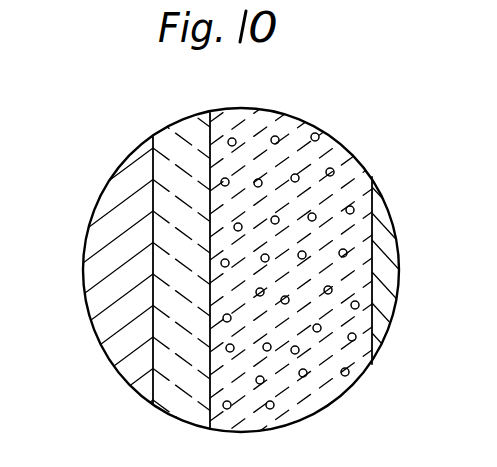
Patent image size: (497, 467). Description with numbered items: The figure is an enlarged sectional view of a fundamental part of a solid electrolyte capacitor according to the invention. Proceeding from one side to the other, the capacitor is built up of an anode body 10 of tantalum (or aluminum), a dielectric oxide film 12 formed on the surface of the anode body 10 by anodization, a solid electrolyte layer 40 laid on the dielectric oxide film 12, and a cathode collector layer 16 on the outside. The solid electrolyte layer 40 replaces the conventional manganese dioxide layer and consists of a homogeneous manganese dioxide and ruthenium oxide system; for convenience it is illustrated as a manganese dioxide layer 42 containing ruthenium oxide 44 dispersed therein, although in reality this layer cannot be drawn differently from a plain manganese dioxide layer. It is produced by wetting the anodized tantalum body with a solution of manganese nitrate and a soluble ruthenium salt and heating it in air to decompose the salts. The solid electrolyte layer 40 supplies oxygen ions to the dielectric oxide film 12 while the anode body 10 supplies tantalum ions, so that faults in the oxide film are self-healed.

The anode body 10 is at (106, 204).
The dielectric oxide film 12 is at (168, 129).
The cathode collector layer 16 is at (393, 225).
The solid electrolyte layer 40 is at (314, 119).
The manganese dioxide layer 42 is at (263, 124).
The ruthenium oxide 44 is at (335, 171).